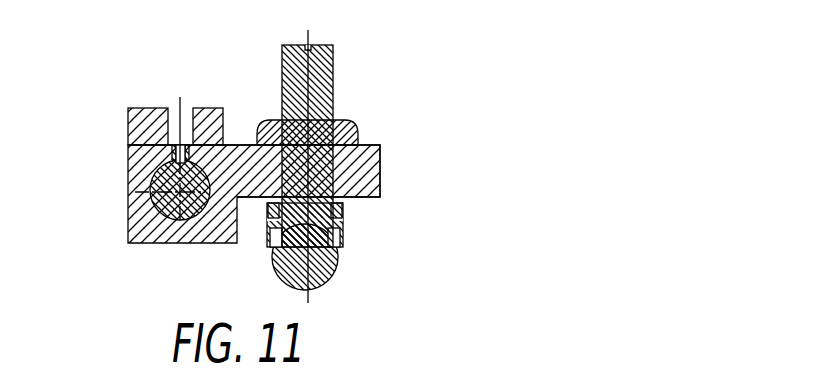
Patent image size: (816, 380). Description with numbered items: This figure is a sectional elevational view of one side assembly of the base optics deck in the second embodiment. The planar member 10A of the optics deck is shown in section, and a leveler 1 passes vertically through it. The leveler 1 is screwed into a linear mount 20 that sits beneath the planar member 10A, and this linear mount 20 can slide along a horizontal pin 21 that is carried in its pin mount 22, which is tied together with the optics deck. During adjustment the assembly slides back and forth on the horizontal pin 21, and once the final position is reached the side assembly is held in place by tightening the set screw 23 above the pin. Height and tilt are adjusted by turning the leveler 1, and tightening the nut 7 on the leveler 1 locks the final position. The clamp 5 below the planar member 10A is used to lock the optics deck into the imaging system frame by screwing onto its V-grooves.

The leveler 1 is at (333, 73).
The clamp 5 is at (345, 208).
The nut 7 is at (357, 132).
The planar member 10A is at (380, 167).
The linear mount 20 is at (130, 225).
The horizontal pin 21 is at (160, 183).
The pin mount 22 is at (134, 108).
The set screw 23 is at (188, 128).